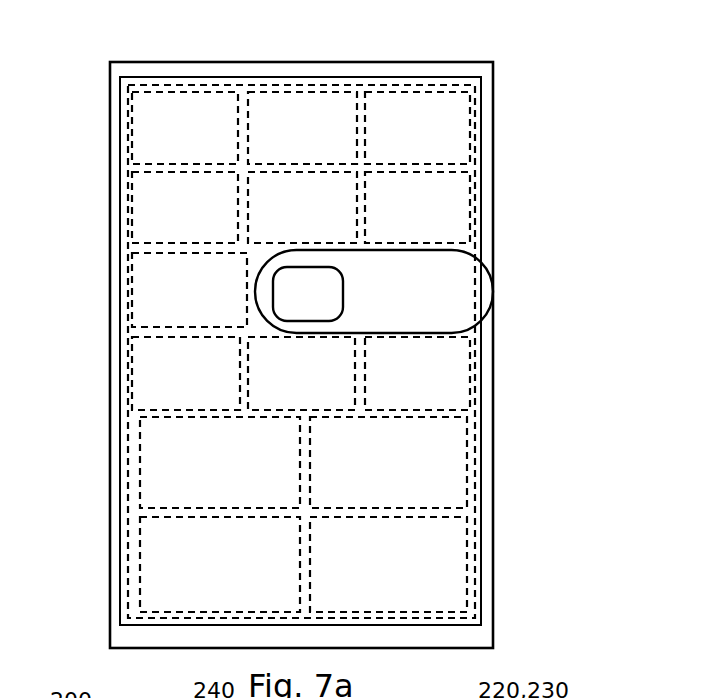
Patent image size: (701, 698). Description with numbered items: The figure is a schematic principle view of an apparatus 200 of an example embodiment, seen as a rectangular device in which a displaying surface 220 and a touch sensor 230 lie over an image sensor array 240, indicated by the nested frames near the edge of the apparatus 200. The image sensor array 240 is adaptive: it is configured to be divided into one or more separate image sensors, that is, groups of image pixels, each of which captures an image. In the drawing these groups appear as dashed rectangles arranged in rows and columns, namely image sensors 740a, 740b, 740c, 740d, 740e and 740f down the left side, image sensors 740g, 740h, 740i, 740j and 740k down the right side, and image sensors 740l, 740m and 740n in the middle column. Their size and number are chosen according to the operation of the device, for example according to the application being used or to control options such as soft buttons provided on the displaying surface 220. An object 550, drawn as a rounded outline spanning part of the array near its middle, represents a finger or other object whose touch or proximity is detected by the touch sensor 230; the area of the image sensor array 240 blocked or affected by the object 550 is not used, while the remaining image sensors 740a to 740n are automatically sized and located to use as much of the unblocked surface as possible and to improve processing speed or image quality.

The apparatus 200 is at (88, 57).
The image sensor array 240 is at (300, 319).
The displaying surface 220 is at (343, 313).
The touch sensor 230 is at (343, 313).
The object 550 is at (409, 291).
The image sensor 740a is at (135, 128).
The image sensor 740b is at (135, 207).
The image sensor 740c is at (140, 290).
The image sensor 740d is at (136, 373).
The image sensor 740e is at (166, 462).
The image sensor 740f is at (166, 564).
The image sensor 740g is at (466, 128).
The image sensor 740h is at (466, 207).
The image sensor 740i is at (464, 373).
The image sensor 740j is at (436, 462).
The image sensor 740k is at (440, 561).
The image sensor 740l is at (302, 128).
The image sensor 740m is at (302, 207).
The image sensor 740n is at (301, 373).